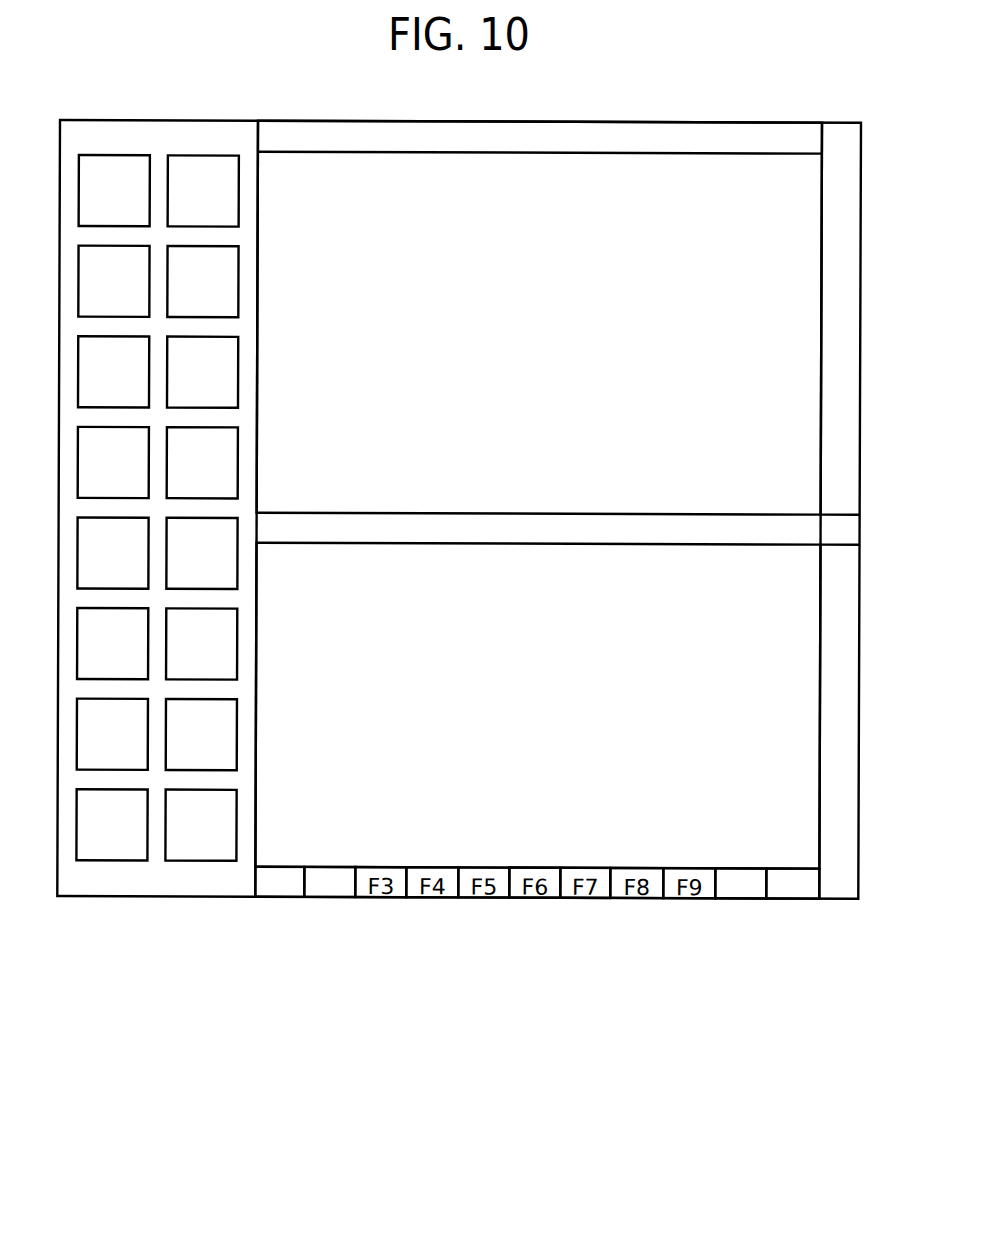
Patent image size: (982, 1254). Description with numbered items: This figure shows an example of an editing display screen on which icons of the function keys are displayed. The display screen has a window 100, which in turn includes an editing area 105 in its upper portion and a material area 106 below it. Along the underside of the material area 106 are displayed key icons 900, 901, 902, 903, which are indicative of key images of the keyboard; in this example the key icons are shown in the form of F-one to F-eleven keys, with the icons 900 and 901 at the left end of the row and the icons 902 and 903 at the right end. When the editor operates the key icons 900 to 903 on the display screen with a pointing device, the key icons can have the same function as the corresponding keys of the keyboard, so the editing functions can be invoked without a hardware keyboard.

The window 100 is at (593, 122).
The editing area 105 is at (352, 190).
The material area 106 is at (578, 843).
The function key icon 900 is at (273, 898).
The function key icon 901 is at (345, 898).
The function key icon 902 is at (733, 898).
The function key icon 903 is at (807, 898).